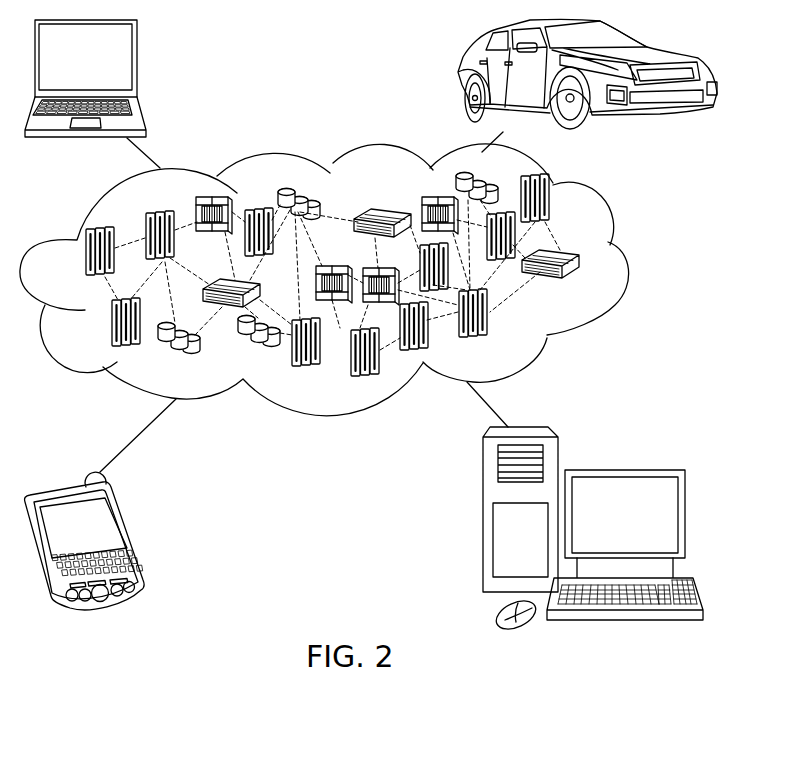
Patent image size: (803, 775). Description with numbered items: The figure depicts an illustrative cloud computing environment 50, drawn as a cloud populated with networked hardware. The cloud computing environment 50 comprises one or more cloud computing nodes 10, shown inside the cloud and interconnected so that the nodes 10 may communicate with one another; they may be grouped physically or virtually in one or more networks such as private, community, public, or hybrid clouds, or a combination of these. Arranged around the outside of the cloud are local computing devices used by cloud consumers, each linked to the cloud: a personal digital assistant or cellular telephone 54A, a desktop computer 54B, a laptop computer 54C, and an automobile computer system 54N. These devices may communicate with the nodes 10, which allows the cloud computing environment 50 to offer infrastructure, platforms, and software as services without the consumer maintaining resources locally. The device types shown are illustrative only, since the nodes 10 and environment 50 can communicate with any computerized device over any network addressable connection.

The cloud computing node 10 is at (579, 283).
The cloud computing environment 50 is at (620, 260).
The personal digital assistant or cellular telephone 54A is at (129, 537).
The desktop computer 54B is at (623, 468).
The laptop computer 54C is at (137, 62).
The automobile computer system 54N is at (460, 72).